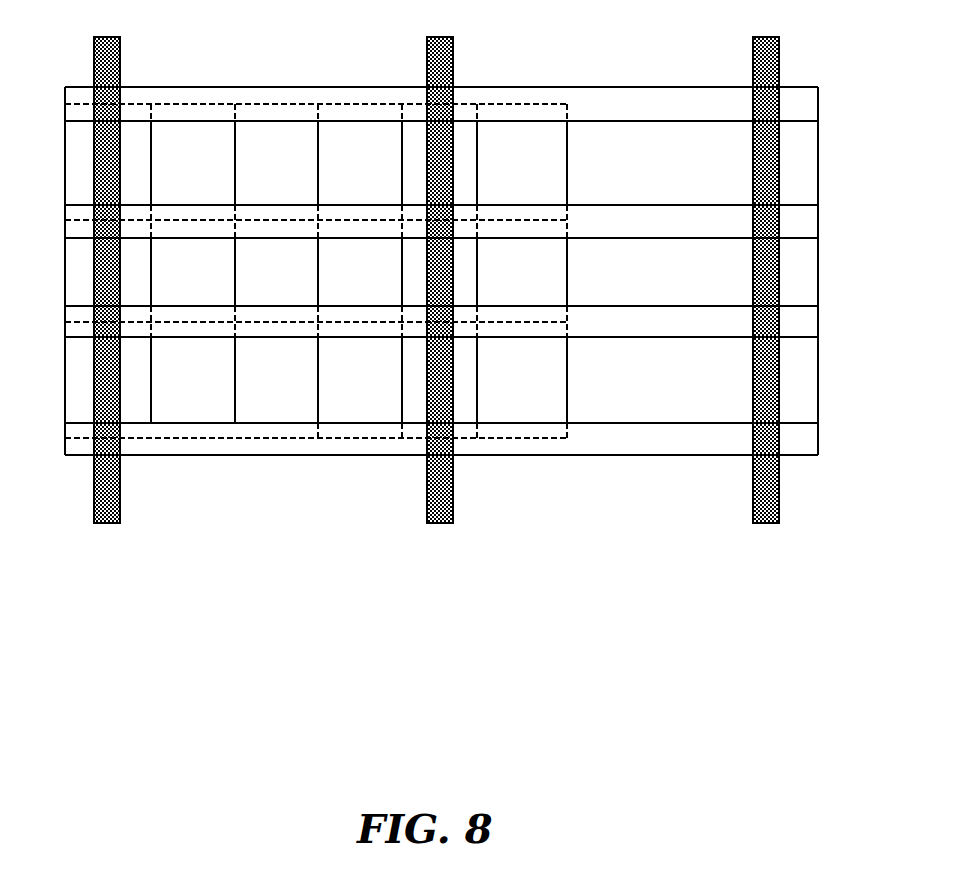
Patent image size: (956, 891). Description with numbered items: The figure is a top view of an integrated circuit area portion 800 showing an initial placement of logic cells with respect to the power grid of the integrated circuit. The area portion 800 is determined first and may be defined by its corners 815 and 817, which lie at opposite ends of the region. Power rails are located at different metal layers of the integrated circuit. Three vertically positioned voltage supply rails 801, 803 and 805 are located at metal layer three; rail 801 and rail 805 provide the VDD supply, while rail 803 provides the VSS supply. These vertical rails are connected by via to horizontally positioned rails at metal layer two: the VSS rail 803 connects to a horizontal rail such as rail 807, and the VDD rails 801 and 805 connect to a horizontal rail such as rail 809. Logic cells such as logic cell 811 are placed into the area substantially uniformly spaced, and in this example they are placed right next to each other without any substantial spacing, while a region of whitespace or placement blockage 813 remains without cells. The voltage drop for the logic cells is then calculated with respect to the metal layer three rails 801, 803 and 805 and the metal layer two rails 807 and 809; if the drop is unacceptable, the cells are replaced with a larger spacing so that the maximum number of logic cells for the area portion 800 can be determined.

The integrated circuit area portion 800 is at (650, 68).
The vertically positioned voltage supply rail 801 is at (107, 542).
The vertically positioned voltage supply rail 803 is at (440, 542).
The vertically positioned voltage supply rail 805 is at (766, 542).
The horizontally positioned rail 807 is at (282, 440).
The horizontally positioned rail 809 is at (687, 315).
The logic cell 811 is at (192, 370).
The whitespace or placement blockage 813 is at (620, 384).
The corner 815 is at (58, 479).
The corner 817 is at (813, 83).